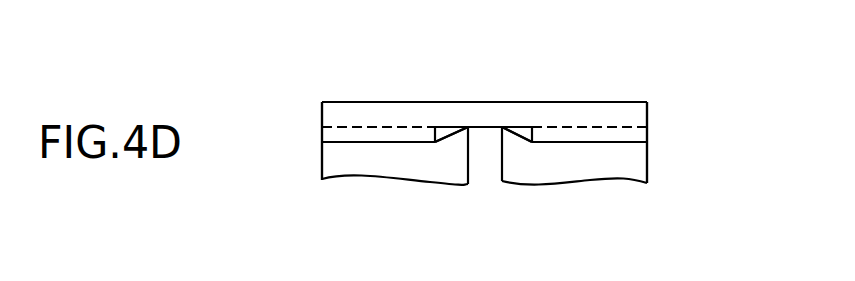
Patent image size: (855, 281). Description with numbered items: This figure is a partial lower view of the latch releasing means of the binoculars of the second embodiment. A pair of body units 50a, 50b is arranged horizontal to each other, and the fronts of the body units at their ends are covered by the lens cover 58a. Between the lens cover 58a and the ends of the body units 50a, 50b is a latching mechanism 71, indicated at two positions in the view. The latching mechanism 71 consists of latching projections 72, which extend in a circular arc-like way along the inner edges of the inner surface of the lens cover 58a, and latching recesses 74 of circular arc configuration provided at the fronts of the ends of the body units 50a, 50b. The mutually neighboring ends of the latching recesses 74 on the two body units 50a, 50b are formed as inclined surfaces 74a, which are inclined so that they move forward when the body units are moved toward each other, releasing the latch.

The body unit 50a is at (320, 152).
The body unit 50b is at (650, 158).
The lens cover 58a is at (500, 98).
The latching mechanism 71 is at (420, 86).
The latching projection 72 is at (335, 132).
The latching recess 74 is at (381, 141).
The inclined surface 74a is at (451, 133).